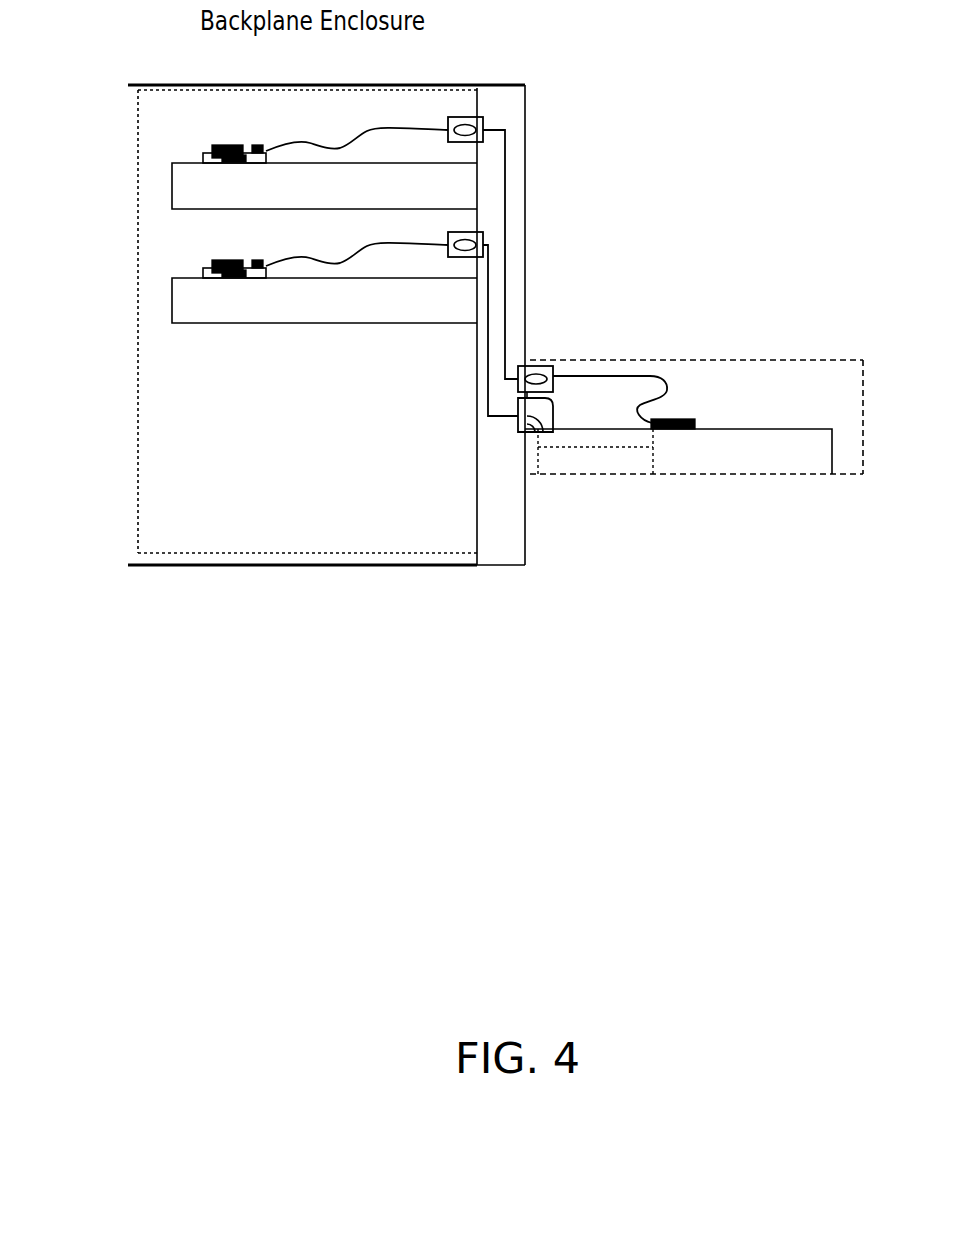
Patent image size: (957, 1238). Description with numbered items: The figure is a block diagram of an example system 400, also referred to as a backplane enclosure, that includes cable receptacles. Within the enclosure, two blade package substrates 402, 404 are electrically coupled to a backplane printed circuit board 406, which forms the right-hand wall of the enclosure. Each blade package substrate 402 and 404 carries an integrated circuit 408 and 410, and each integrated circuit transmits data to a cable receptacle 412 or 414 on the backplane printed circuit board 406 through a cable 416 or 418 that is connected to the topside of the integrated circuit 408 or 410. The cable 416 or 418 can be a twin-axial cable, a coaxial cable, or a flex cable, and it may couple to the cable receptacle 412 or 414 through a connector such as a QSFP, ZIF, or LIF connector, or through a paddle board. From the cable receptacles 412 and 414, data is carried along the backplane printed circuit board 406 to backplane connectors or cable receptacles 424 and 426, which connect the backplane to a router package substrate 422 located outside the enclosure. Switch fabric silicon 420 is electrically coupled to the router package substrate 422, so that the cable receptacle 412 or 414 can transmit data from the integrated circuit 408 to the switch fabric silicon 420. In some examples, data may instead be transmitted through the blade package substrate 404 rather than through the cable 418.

The system 400 is at (535, 1023).
The blade package substrate 402 is at (172, 163).
The blade package substrate 404 is at (203, 268).
The backplane printed circuit board 406 is at (500, 566).
The integrated circuit 408 is at (228, 148).
The integrated circuit 410 is at (228, 263).
The cable receptacle 412 is at (476, 118).
The cable receptacle 414 is at (483, 236).
The cable 416 is at (430, 128).
The cable 418 is at (428, 244).
The switch fabric silicon 420 is at (673, 422).
The router package substrate 422 is at (705, 427).
The backplane connector 424 is at (541, 366).
The backplane connector 426 is at (553, 403).